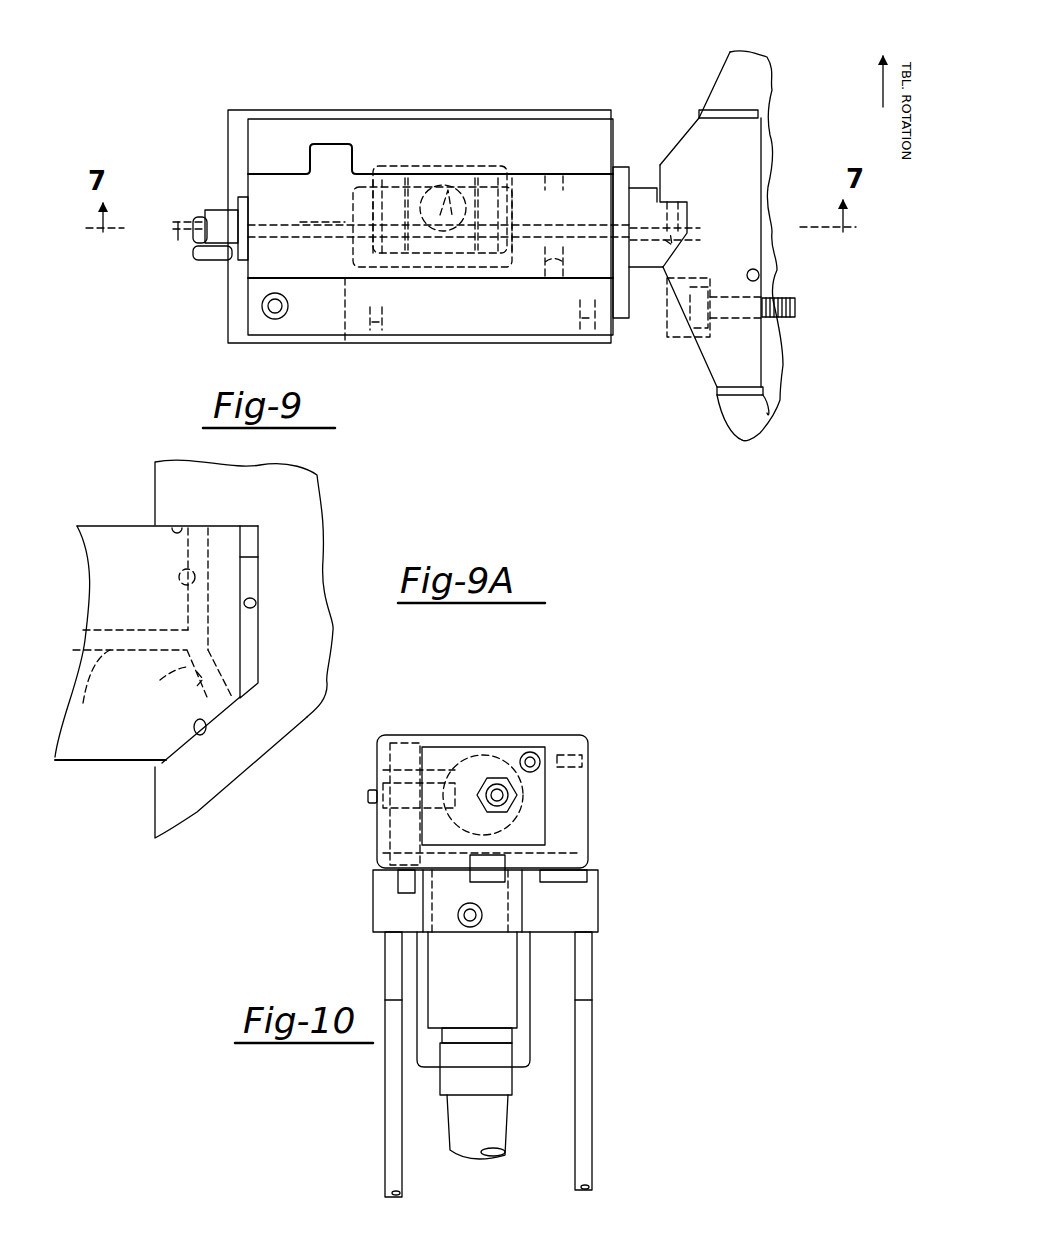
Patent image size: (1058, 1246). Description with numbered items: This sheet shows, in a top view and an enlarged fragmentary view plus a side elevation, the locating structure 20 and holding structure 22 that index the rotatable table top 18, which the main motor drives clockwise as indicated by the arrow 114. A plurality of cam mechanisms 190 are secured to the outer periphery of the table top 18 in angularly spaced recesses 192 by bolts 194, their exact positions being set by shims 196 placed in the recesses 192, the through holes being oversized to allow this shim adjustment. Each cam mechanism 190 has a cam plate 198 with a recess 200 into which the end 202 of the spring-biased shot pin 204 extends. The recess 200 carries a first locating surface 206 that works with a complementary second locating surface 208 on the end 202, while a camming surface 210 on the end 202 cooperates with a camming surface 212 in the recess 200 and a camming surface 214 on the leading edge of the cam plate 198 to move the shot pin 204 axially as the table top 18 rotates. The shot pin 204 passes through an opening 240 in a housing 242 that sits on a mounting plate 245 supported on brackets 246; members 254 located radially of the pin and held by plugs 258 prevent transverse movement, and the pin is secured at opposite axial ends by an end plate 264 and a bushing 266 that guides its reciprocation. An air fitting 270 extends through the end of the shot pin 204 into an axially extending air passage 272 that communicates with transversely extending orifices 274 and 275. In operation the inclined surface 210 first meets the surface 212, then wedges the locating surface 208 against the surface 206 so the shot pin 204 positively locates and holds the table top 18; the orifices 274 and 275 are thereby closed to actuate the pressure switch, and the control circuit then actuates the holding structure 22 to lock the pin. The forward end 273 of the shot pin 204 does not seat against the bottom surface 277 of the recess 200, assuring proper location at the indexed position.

In FIG. 9, the rotatable table top 18 is at (740, 72).
In FIG. 9, the locating structure 20 is at (563, 96).
In FIG. 9, the holding structure 22 is at (465, 163).
In FIG. 9, the arrow 114 is at (883, 100).
In FIG. 9, the cam mechanism 190 is at (738, 167).
In FIG. 9A, the cam mechanism 190 is at (292, 570).
In FIG. 9, the recess 192 is at (760, 275).
In FIG. 9, the bolt 194 is at (780, 317).
In FIG. 9, the shim 196 is at (745, 418).
In FIG. 9, the cam plate 198 is at (738, 188).
In FIG. 9A, the cam plate 198 is at (303, 624).
In FIG. 9A, the recess 200 is at (285, 665).
In FIG. 9A, the end of shot pin 202 is at (112, 745).
In FIG. 9, the shot pin 204 is at (664, 269).
In FIG. 9A, the first locating surface 206 is at (180, 525).
In FIG. 9, the second locating surface 208 is at (661, 166).
In FIG. 9A, the second locating surface 208 is at (156, 525).
In FIG. 9A, the camming surface 210 is at (170, 782).
In FIG. 9A, the camming surface 212 is at (203, 734).
In FIG. 9, the camming surface 214 is at (703, 117).
In FIG. 9, the opening 240 is at (597, 186).
In FIG. 10, the opening 240 is at (503, 748).
In FIG. 9, the housing 242 is at (330, 130).
In FIG. 10, the housing 242 is at (553, 735).
In FIG. 10, the mounting plate 245 is at (386, 901).
In FIG. 9, the bracket 246 is at (430, 128).
In FIG. 10, the bracket 246 is at (393, 975).
In FIG. 10, the member 254 is at (385, 770).
In FIG. 10, the plug 258 is at (380, 806).
In FIG. 9, the end plate 264 is at (240, 200).
In FIG. 9, the bushing 266 is at (628, 320).
In FIG. 10, the bushing 266 is at (433, 762).
In FIG. 9, the air fitting 270 is at (180, 240).
In FIG. 9, the air passage 272 is at (330, 192).
In FIG. 9A, the air passage 272 is at (148, 679).
In FIG. 9A, the forward end of shot pin 273 is at (258, 552).
In FIG. 9A, the orifice 274 is at (180, 578).
In FIG. 9A, the orifice 275 is at (166, 688).
In FIG. 9A, the bottom surface of cam recess 277 is at (256, 603).